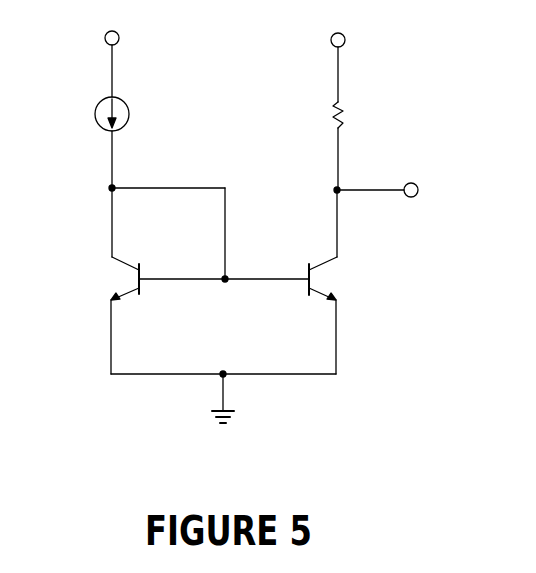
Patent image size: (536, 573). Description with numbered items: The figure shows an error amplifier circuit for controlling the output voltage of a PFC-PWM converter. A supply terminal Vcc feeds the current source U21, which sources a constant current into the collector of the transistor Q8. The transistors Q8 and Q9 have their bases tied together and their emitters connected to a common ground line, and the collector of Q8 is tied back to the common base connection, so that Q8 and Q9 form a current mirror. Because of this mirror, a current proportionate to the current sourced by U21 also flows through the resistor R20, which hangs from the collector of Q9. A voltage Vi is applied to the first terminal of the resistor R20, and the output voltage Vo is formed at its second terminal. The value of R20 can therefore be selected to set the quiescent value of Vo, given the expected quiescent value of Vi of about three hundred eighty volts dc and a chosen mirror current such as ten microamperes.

The current source U21 is at (84, 142).
The resistor R20 is at (363, 146).
The transistor Q8 is at (149, 279).
The transistor Q9 is at (302, 282).
The supply voltage terminal Vcc is at (111, 49).
The voltage Vi is at (337, 51).
The output voltage Vo is at (395, 191).